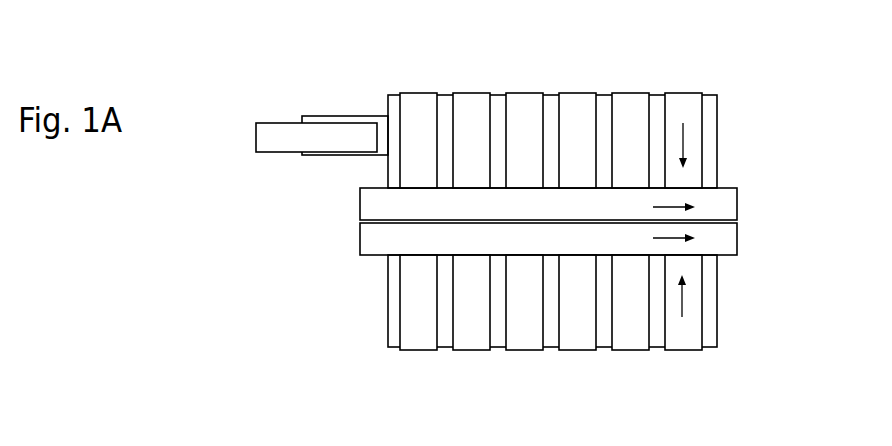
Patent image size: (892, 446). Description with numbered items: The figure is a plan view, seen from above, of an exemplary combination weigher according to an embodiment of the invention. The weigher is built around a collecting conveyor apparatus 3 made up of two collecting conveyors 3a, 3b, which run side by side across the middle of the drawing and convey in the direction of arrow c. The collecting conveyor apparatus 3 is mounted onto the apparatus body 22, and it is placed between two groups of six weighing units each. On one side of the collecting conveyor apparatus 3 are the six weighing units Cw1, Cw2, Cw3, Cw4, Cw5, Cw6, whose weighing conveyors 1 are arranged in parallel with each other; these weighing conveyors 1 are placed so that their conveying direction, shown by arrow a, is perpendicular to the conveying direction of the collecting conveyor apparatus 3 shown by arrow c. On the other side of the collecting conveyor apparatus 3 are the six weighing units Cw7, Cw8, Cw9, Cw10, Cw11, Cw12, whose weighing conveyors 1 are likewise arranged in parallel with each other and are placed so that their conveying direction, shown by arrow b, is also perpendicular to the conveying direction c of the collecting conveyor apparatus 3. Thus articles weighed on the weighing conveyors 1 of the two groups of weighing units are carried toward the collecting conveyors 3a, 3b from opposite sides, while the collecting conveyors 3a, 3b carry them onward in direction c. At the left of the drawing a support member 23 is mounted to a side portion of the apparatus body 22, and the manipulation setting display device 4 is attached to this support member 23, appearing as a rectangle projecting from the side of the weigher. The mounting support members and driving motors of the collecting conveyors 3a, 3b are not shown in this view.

The weighing conveyor 1 is at (602, 219).
The apparatus body 22 is at (718, 152).
The collecting conveyor apparatus 3 is at (602, 218).
The collecting conveyor 3a is at (737, 209).
The collecting conveyor 3b is at (737, 230).
The manipulation setting display device 4 is at (256, 140).
The support member 23 is at (314, 155).
The arrow a is at (688, 135).
The arrow b is at (683, 302).
The arrow c is at (672, 205).
The weighing unit Cw1 is at (688, 92).
The weighing unit Cw2 is at (635, 92).
The weighing unit Cw3 is at (582, 92).
The weighing unit Cw4 is at (529, 92).
The weighing unit Cw5 is at (476, 92).
The weighing unit Cw6 is at (423, 92).
The weighing unit Cw7 is at (687, 351).
The weighing unit Cw8 is at (634, 351).
The weighing unit Cw9 is at (581, 351).
The weighing unit Cw10 is at (528, 351).
The weighing unit Cw11 is at (475, 351).
The weighing unit Cw12 is at (422, 351).